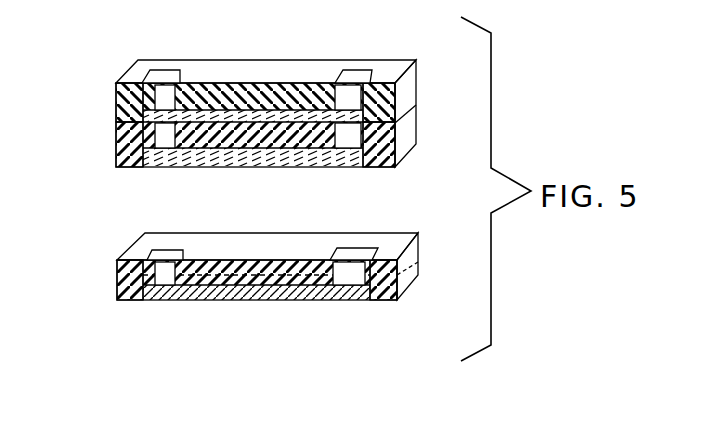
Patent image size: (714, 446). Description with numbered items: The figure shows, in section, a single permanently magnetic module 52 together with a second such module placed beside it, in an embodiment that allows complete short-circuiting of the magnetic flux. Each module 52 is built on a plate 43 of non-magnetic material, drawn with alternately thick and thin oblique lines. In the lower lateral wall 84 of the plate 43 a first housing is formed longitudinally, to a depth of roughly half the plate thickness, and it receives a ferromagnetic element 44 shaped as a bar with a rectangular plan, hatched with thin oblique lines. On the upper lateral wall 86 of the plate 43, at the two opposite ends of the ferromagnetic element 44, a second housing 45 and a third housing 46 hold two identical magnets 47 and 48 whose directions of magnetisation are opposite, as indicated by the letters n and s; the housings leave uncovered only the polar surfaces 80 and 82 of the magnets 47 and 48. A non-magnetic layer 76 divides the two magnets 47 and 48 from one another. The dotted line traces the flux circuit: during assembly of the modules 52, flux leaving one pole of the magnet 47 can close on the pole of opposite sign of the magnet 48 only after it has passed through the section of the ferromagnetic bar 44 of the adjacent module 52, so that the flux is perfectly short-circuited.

The plate 43 is at (126, 102).
The ferromagnetic element 44 is at (296, 300).
The second housing 45 is at (152, 72).
The third housing 46 is at (354, 72).
The magnet 47 is at (167, 93).
The magnet 48 is at (347, 88).
The module 52 is at (165, 306).
The non-magnetic layer 76 is at (293, 142).
The polar surface 80 is at (168, 253).
The polar surface 82 is at (353, 252).
The lower lateral wall 84 is at (223, 300).
The upper lateral wall 86 is at (232, 250).